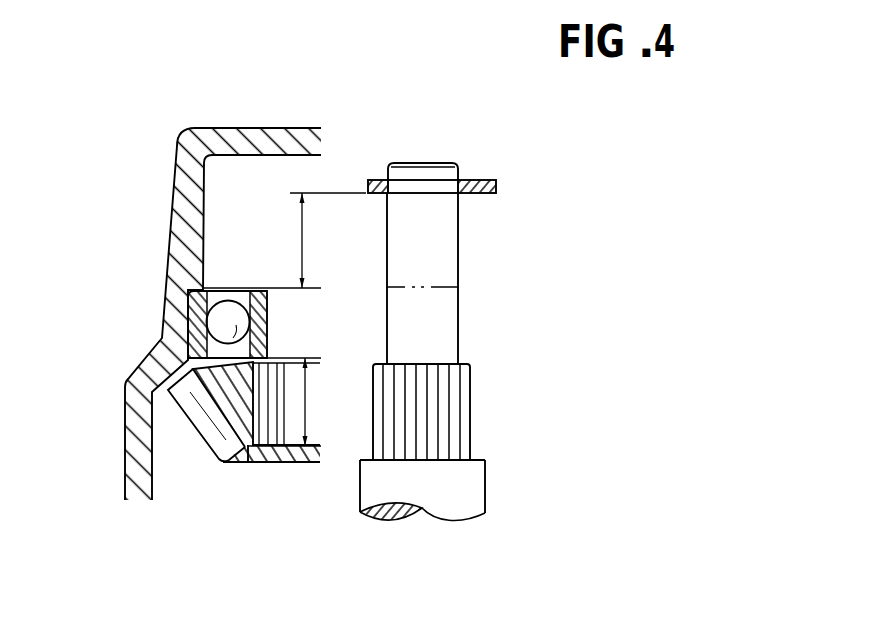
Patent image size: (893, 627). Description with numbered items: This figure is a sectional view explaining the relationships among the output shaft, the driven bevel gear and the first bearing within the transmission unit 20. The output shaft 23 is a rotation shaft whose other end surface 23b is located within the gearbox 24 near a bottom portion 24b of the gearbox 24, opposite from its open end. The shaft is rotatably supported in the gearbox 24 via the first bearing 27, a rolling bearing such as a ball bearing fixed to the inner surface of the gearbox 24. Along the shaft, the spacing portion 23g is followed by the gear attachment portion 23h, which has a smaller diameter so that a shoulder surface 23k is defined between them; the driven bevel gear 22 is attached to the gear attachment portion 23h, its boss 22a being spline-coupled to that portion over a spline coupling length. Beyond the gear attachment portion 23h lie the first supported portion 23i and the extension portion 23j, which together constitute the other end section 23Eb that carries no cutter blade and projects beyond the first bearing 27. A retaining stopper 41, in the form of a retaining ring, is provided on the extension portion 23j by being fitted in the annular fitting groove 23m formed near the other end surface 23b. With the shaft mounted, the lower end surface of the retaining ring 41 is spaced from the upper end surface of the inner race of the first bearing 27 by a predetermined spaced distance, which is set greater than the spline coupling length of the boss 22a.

The transmission unit 20 is at (641, 171).
The driven bevel gear 22 is at (202, 440).
The boss 22a is at (221, 459).
The output shaft 23 is at (488, 510).
The other end surface 23b is at (402, 162).
The annular fitting groove 23m is at (423, 184).
The extension portion 23j is at (448, 243).
The first supported portion 23i is at (448, 322).
The other end section 23Eb is at (582, 223).
The gear attachment portion 23h is at (458, 385).
The shoulder surface 23k is at (475, 456).
The spacing portion 23g is at (478, 477).
The gearbox 24 is at (171, 181).
The bottom portion 24b is at (272, 137).
The first bearing 27 is at (192, 323).
The retaining stopper 41 is at (487, 180).